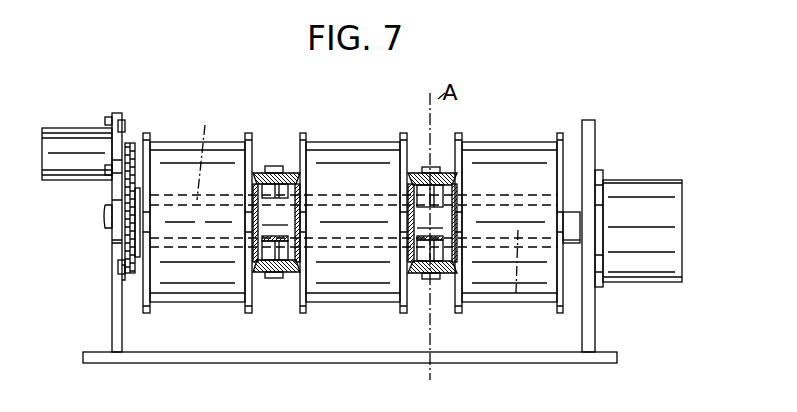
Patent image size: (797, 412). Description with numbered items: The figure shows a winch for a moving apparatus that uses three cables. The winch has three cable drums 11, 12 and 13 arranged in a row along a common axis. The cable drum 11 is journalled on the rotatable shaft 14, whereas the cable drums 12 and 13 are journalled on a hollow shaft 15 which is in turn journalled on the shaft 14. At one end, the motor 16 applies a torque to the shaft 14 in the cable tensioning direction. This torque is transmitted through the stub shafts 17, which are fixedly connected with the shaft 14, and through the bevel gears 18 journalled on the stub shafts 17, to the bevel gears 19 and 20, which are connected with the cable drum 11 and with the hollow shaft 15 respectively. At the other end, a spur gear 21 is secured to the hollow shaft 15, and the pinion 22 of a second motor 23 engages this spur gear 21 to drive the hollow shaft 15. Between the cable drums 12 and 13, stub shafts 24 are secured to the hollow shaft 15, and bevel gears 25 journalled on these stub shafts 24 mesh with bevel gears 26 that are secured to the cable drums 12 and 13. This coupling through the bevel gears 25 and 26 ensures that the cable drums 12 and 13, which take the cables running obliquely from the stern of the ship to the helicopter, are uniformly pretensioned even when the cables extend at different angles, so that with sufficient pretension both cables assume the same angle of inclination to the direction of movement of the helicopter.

The cable drum 11 is at (515, 165).
The cable drum 12 is at (357, 160).
The cable drum 13 is at (182, 155).
The rotatable shaft 14 is at (514, 317).
The hollow shaft 15 is at (204, 128).
The motor 16 is at (651, 262).
The stub shaft 17 is at (425, 252).
The bevel gear 18 is at (441, 178).
The bevel gear 19 is at (458, 190).
The bevel gear 20 is at (405, 290).
The spur gear 21 is at (127, 278).
The pinion 22 is at (128, 142).
The motor 23 is at (73, 147).
The stub shaft 24 is at (268, 253).
The bevel gear 25 is at (258, 172).
The bevel gear 26 is at (298, 190).